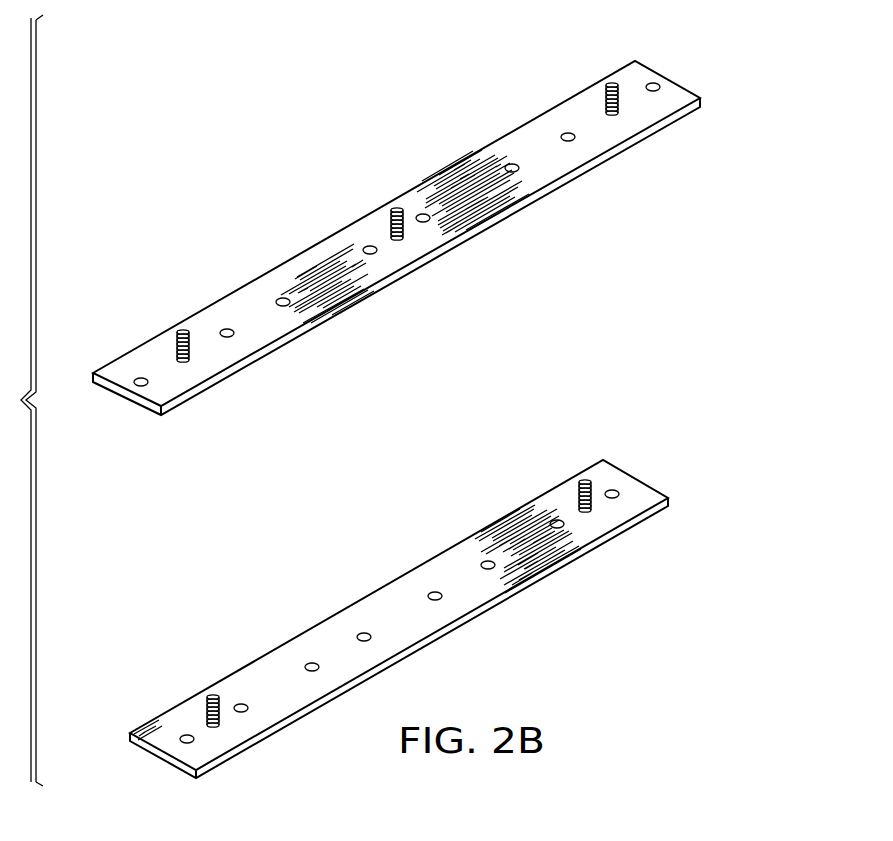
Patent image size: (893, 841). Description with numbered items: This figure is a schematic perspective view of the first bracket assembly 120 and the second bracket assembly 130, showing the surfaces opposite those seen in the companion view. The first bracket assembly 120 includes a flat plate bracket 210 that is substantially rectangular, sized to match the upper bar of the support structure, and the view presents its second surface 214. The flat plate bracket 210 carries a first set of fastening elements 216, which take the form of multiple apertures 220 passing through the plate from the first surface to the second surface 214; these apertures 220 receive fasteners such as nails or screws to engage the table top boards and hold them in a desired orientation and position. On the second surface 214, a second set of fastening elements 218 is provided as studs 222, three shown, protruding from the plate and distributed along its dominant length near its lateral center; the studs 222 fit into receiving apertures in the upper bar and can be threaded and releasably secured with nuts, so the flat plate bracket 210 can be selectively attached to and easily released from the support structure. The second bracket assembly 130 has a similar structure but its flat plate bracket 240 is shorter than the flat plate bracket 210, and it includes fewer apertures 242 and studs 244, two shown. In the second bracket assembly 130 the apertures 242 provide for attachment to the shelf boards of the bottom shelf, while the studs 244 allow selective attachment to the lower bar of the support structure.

The first bracket assembly 120 is at (420, 214).
The flat plate bracket 210 is at (322, 252).
The second surface 214 is at (582, 102).
The first set of fastening elements 216 is at (141, 378).
The apertures 220 is at (389, 200).
The second set of fastening elements 218 is at (192, 343).
The studs 222 is at (477, 246).
The second bracket assembly 130 is at (411, 598).
The flat plate bracket 240 is at (388, 599).
The apertures 242 is at (186, 733).
The studs 244 is at (222, 717).